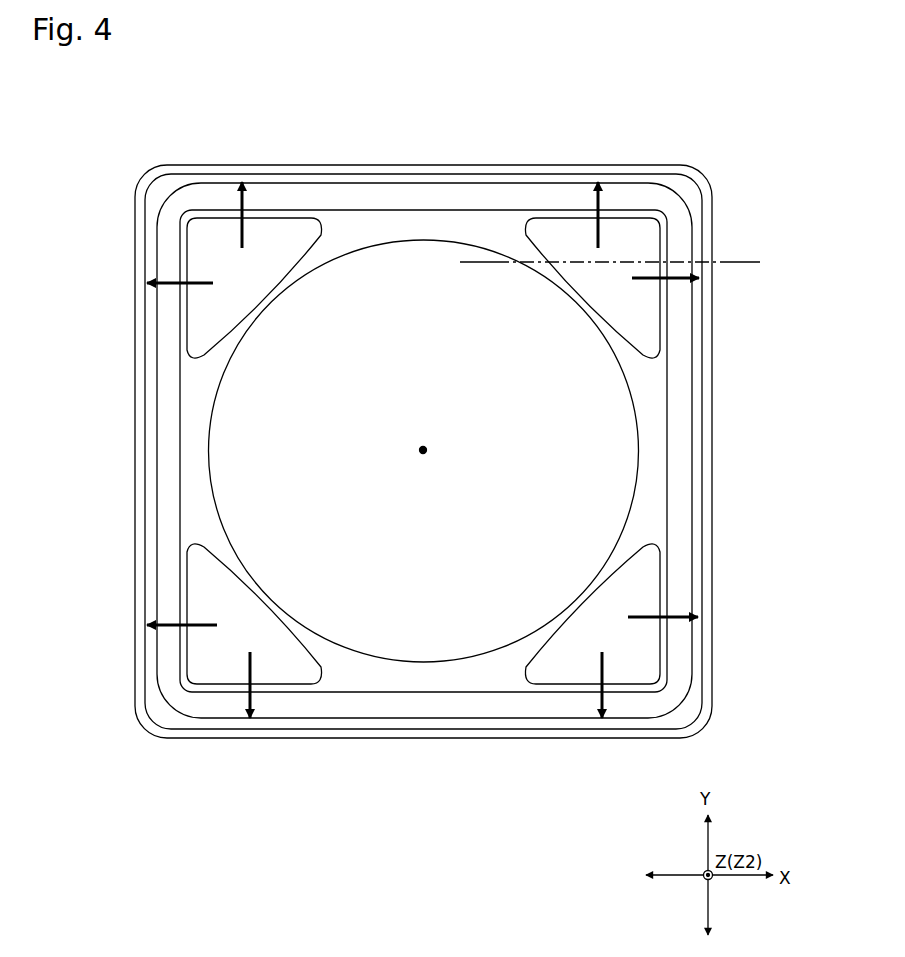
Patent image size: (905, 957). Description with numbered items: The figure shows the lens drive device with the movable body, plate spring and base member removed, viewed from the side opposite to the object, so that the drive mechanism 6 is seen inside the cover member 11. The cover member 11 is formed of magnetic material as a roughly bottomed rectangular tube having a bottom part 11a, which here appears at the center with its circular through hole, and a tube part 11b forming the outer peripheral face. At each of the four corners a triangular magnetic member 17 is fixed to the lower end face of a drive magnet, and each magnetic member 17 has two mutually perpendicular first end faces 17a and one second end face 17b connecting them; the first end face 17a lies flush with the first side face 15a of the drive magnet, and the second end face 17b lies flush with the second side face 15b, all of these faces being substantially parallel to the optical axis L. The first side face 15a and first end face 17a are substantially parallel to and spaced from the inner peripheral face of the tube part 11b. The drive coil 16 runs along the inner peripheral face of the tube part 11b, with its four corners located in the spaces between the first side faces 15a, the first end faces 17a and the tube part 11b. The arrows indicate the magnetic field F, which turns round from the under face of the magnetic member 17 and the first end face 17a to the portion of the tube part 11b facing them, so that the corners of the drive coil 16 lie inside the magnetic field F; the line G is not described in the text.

The cover member 11 is at (423, 416).
The tube part 11b is at (432, 165).
The bottom part 11a is at (380, 234).
The drive coil 16 is at (363, 180).
The drive mechanism 6 is at (686, 192).
The magnetic member 17 is at (644, 664).
The first side face 15a is at (422, 451).
The first end face 17a is at (422, 451).
The second side face 15b is at (423, 451).
The second end face 17b is at (423, 451).
The optical axis L is at (422, 443).
The center of gravity line G is at (610, 277).
The magnetic field F is at (439, 450).